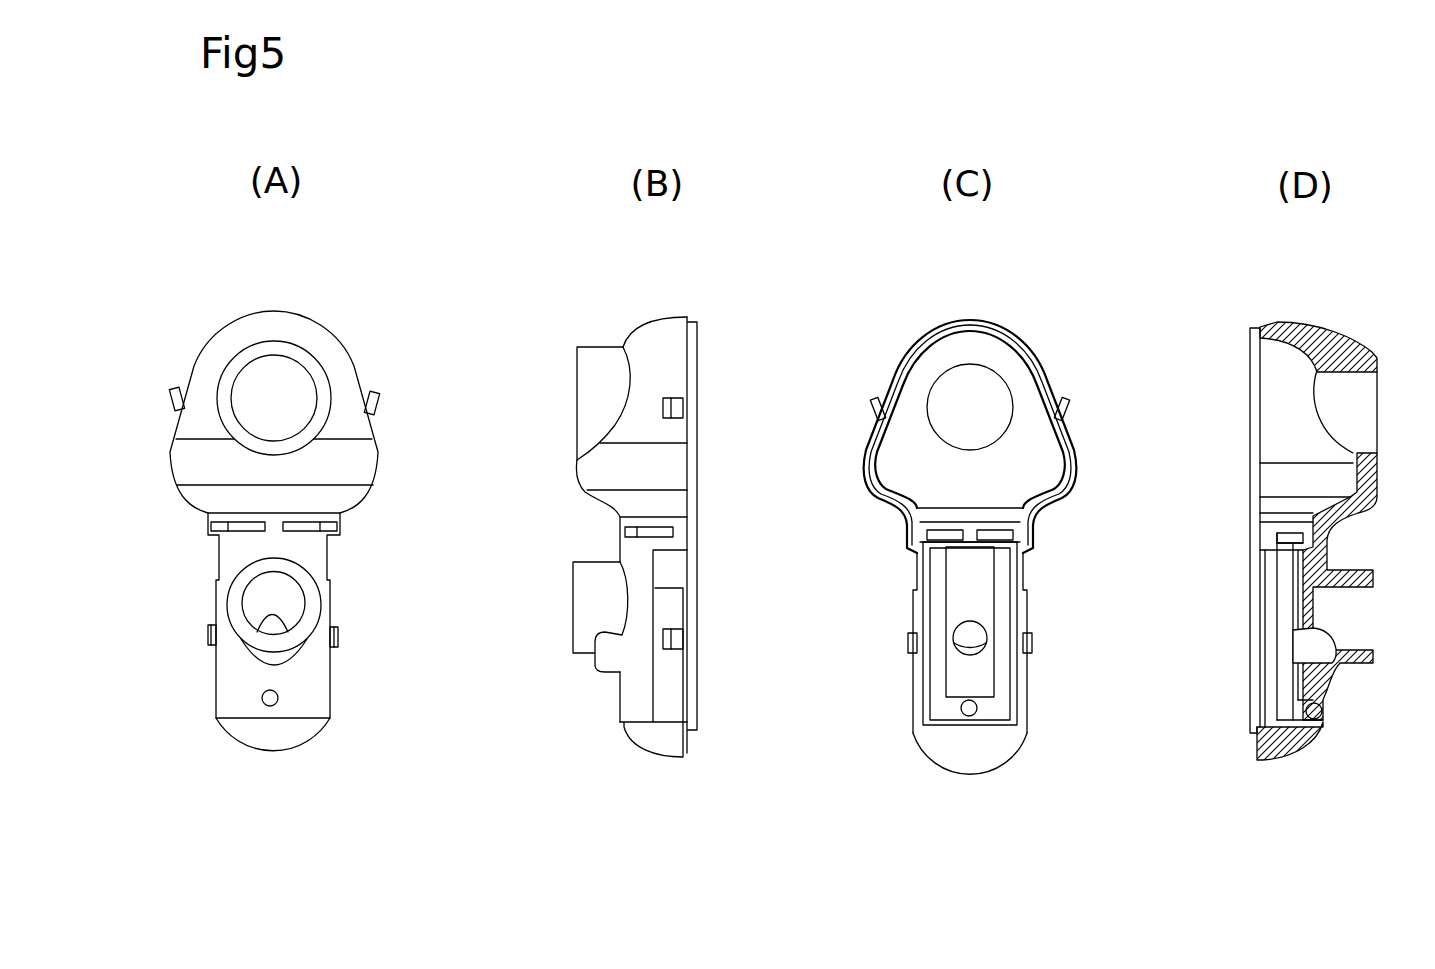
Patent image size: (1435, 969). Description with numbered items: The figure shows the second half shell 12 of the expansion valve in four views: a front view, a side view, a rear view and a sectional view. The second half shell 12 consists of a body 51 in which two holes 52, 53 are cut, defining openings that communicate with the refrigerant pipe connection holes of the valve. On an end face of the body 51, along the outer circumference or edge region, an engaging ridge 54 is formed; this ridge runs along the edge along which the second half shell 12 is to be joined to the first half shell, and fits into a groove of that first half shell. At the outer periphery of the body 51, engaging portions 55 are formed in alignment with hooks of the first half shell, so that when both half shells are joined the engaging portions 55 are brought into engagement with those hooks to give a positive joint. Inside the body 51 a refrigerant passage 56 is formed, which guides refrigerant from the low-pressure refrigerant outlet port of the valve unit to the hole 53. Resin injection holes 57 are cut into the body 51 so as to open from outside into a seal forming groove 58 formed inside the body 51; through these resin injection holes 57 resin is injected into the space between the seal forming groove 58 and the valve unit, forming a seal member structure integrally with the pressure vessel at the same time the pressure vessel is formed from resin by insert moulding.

The second half shell 12 is at (305, 486).
The body 51 is at (283, 310).
The hole 52 is at (287, 378).
The hole 53 is at (292, 601).
The engaging ridge 54 is at (698, 339).
The engaging portion 55 is at (178, 393).
The refrigerant passage 56 is at (1313, 650).
The resin injection hole 57 is at (228, 527).
The seal forming groove 58 is at (945, 703).